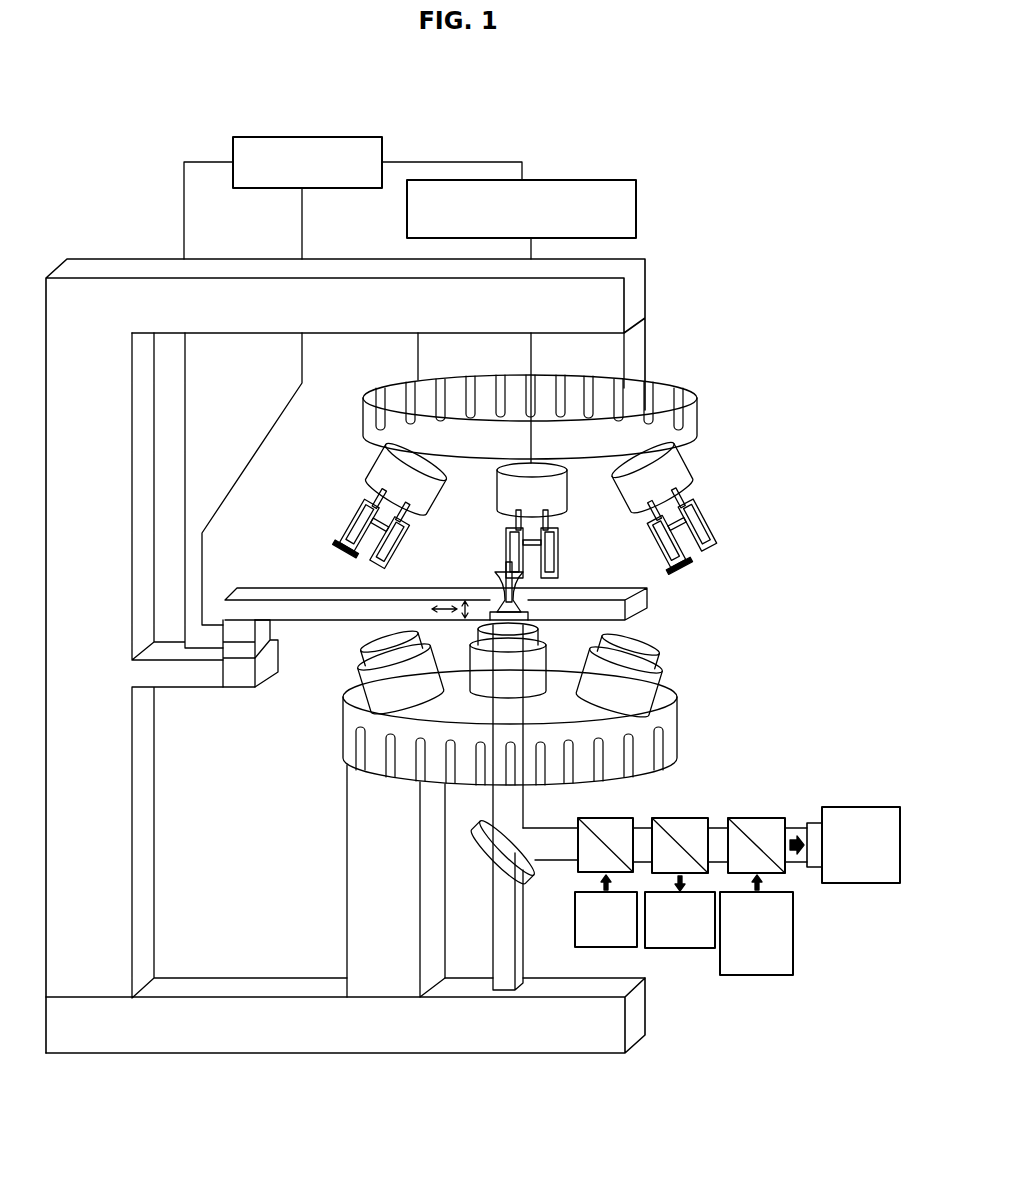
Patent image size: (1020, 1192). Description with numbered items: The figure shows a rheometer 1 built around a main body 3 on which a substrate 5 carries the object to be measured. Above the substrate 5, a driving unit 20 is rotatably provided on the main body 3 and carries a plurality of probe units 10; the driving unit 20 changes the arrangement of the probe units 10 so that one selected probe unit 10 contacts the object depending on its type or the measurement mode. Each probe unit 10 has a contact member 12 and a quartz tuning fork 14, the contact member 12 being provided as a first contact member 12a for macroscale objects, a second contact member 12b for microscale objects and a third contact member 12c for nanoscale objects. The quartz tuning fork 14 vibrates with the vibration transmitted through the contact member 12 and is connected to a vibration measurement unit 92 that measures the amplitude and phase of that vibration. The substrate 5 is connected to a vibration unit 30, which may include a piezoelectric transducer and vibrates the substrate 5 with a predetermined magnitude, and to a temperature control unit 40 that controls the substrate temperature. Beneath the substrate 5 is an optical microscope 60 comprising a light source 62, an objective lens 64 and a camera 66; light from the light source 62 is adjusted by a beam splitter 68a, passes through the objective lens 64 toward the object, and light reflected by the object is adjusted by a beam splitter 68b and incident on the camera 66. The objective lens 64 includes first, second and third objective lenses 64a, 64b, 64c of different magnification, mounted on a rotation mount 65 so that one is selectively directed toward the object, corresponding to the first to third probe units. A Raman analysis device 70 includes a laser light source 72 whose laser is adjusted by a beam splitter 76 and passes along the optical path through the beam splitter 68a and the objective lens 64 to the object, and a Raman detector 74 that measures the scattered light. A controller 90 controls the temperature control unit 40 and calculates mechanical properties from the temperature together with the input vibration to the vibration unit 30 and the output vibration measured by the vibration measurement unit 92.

The rheometer 1 is at (80, 105).
The main body 3 is at (614, 308).
The substrate 5 is at (582, 592).
The probe unit 10 is at (693, 491).
The contact member 12 is at (530, 514).
The first contact member 12a is at (357, 550).
The second contact member 12b is at (502, 566).
The third contact member 12c is at (672, 566).
The quartz tuning fork 14 is at (690, 537).
The driving unit 20 is at (693, 416).
The vibration unit 30 is at (242, 648).
The temperature control unit 40 is at (233, 628).
The optical microscope 60 is at (530, 1029).
The light source 62 is at (607, 948).
The objective lens 64 is at (535, 688).
The first objective lens 64a is at (367, 692).
The second objective lens 64b is at (537, 627).
The third objective lens 64c is at (648, 688).
The rotation mount 65 is at (347, 760).
The camera 66 is at (678, 949).
The beam splitter 68a is at (578, 866).
The beam splitter 68b is at (680, 818).
The Raman analysis device 70 is at (802, 990).
The laser light source 72 is at (756, 976).
The Raman detector 74 is at (860, 884).
The beam splitter 76 is at (755, 818).
The controller 90 is at (232, 147).
The vibration measurement unit 92 is at (637, 206).